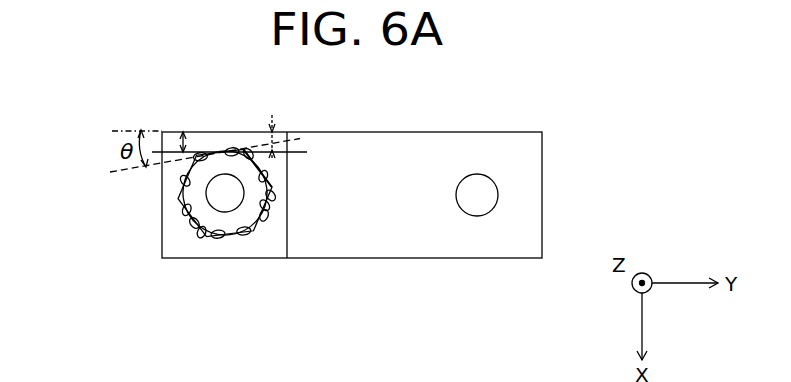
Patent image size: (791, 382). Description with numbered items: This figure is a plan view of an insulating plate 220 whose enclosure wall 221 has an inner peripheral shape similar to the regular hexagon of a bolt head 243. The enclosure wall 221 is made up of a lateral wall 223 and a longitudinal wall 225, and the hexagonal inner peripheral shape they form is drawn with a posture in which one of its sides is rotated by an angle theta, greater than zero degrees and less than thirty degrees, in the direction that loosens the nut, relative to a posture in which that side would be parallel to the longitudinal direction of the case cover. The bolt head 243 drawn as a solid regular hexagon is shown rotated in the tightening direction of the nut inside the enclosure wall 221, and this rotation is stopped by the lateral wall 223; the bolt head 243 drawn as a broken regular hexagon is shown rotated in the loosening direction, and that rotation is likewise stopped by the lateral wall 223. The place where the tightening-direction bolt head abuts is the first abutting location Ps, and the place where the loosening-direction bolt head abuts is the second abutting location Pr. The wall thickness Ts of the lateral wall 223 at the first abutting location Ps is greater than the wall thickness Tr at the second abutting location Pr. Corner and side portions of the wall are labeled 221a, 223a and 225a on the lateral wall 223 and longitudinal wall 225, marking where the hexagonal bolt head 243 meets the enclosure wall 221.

The insulating plate 220 is at (542, 176).
The enclosure wall 221 is at (128, 115).
The side face of nut 221a is at (262, 165).
The lateral wall 223 is at (252, 152).
The projection corner portion 223a is at (183, 186).
The longitudinal wall 225 is at (178, 200).
The projection corner portion 225a is at (196, 240).
The bolt head 243 is at (200, 245).
The wall thickness Ts is at (180, 130).
The wall thickness Tr is at (272, 116).
The first abutting location Ps is at (206, 150).
The second abutting location Pr is at (226, 150).